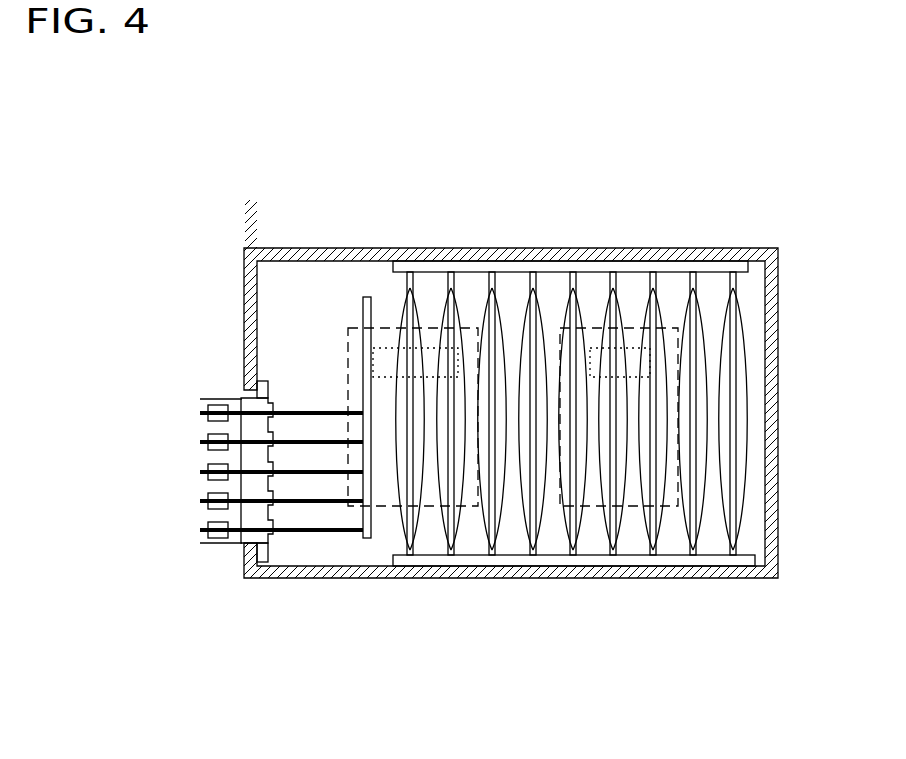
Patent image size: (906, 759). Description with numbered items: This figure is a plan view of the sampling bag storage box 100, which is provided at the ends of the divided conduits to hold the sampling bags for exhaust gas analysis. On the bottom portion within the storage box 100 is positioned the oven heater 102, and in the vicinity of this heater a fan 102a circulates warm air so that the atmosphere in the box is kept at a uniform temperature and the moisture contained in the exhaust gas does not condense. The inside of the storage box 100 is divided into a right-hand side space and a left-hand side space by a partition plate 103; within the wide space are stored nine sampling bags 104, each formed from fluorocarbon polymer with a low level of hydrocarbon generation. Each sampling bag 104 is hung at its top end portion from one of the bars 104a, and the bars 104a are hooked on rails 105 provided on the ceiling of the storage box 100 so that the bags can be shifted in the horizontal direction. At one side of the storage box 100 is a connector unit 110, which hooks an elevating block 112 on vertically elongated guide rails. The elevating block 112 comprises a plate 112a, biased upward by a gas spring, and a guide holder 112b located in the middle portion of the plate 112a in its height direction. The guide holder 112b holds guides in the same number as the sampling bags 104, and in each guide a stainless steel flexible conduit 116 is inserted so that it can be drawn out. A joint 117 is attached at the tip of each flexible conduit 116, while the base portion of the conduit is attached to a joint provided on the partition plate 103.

The sampling bag storage box 100 is at (410, 248).
The oven heater 102 is at (632, 327).
The fan 102a is at (428, 355).
The partition plate 103 is at (365, 350).
The sampling bag 104 is at (750, 387).
The bar 104a is at (736, 458).
The rail 105 is at (555, 262).
The connector unit 110 is at (231, 462).
The elevating block 112 is at (247, 518).
The plate 112a is at (262, 381).
The guide holder 112b is at (257, 428).
The flexible conduit 116 is at (295, 532).
The joint 117 is at (208, 525).